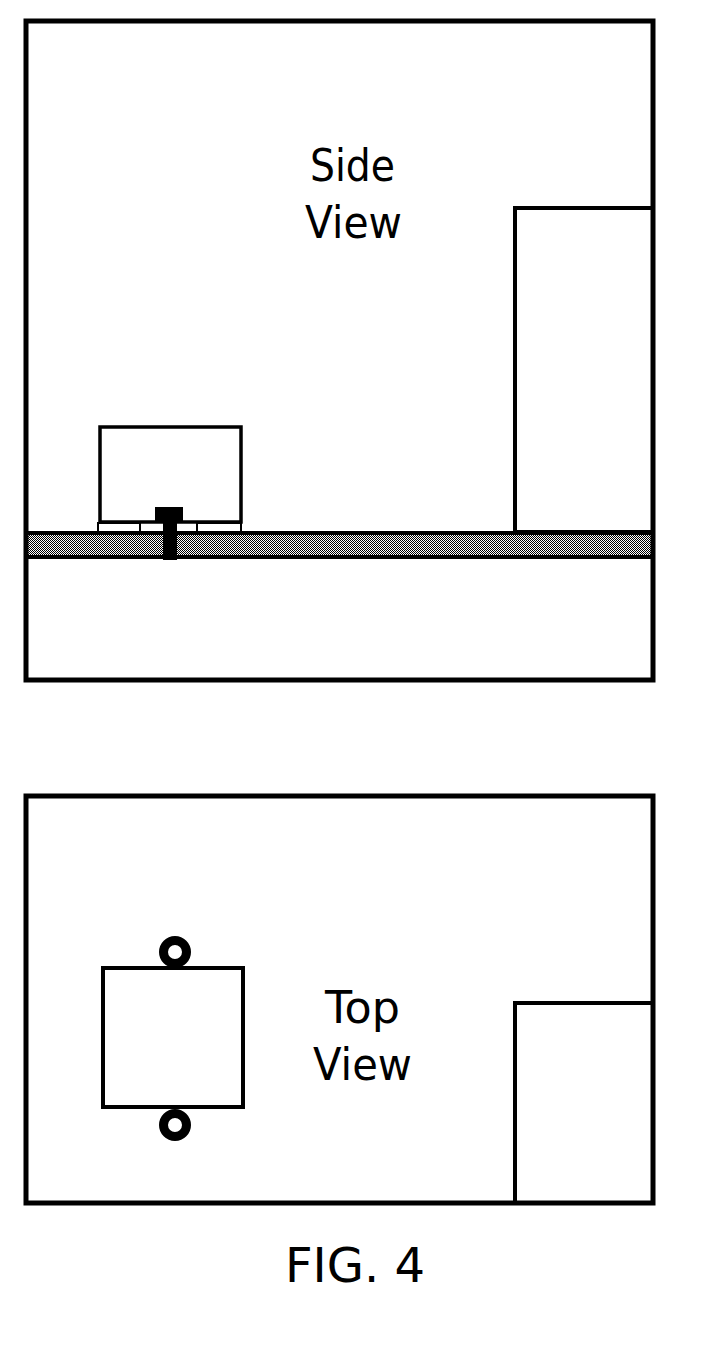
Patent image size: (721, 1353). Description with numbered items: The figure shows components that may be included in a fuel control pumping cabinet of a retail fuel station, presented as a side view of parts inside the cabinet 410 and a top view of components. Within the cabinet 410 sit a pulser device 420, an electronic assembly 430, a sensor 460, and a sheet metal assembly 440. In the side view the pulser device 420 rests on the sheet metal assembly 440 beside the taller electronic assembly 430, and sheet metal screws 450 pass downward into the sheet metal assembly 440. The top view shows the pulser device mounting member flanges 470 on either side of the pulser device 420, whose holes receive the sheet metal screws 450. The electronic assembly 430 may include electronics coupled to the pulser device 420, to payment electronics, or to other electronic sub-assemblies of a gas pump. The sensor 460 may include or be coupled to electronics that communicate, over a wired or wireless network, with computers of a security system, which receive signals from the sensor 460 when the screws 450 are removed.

The cabinet 410 is at (368, 22).
The pulser device 420 is at (192, 427).
The electronic assembly 430 is at (514, 345).
The sheet metal assembly 440 is at (363, 548).
The sheet metal screws 450 is at (163, 560).
The sensor 460 is at (97, 526).
The pulser device mounting member flanges 470 is at (185, 937).